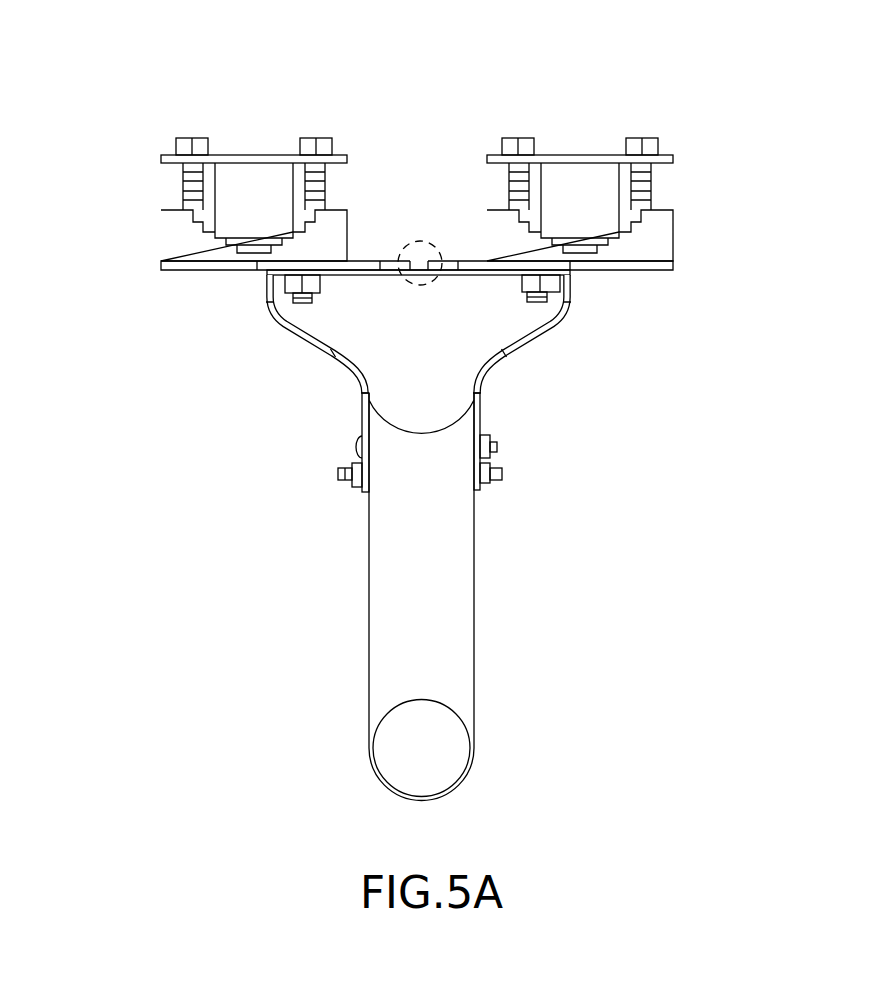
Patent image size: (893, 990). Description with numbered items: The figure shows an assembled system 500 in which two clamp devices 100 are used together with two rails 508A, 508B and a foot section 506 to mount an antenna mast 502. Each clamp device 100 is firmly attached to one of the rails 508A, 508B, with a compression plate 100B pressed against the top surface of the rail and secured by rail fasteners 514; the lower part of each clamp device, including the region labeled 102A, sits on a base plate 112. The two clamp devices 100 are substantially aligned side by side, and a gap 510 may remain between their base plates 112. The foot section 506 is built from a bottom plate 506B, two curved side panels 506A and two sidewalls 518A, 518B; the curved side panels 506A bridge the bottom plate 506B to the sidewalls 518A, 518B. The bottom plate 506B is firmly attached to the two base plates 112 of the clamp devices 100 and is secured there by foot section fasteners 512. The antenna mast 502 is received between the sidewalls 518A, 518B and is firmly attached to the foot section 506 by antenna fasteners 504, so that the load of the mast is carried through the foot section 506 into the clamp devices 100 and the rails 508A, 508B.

The assembled system 500 is at (652, 64).
The clamp device 100 is at (125, 225).
The compression plate 100B is at (165, 158).
The rail fasteners 514 is at (184, 136).
The rail 508A is at (254, 165).
The rail 508B is at (580, 165).
The clamp base 102A is at (170, 246).
The base plate 112 is at (202, 273).
The gap 510 is at (421, 264).
The foot section fasteners 512 is at (545, 285).
The foot section 506 is at (290, 360).
The curved side panels 506A is at (532, 332).
The bottom plate 506B is at (358, 276).
The sidewall 518A is at (478, 425).
The sidewall 518B is at (362, 406).
The antenna fasteners 504 is at (502, 473).
The antenna mast 502 is at (458, 630).